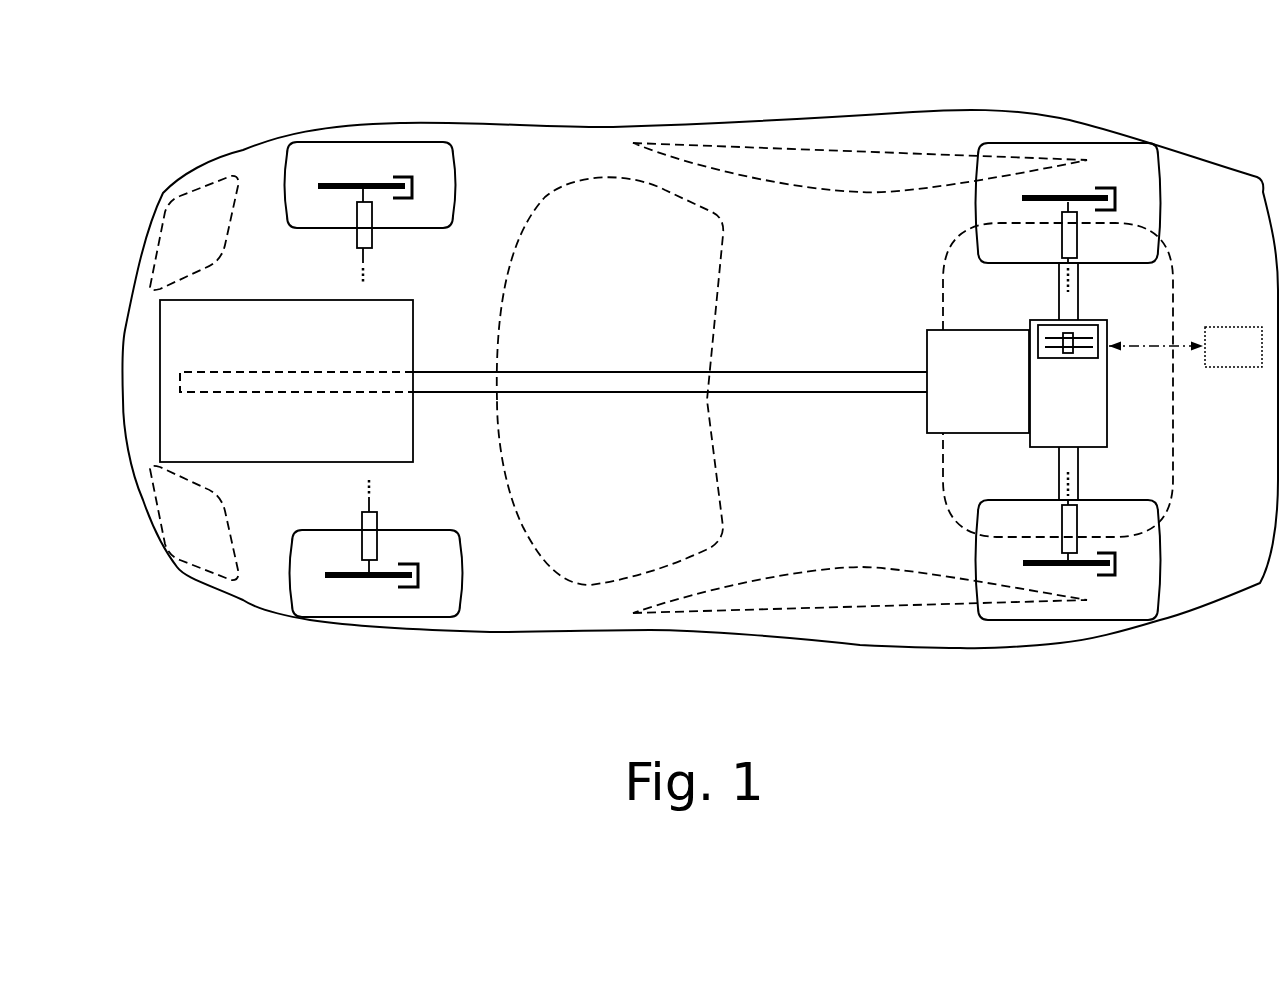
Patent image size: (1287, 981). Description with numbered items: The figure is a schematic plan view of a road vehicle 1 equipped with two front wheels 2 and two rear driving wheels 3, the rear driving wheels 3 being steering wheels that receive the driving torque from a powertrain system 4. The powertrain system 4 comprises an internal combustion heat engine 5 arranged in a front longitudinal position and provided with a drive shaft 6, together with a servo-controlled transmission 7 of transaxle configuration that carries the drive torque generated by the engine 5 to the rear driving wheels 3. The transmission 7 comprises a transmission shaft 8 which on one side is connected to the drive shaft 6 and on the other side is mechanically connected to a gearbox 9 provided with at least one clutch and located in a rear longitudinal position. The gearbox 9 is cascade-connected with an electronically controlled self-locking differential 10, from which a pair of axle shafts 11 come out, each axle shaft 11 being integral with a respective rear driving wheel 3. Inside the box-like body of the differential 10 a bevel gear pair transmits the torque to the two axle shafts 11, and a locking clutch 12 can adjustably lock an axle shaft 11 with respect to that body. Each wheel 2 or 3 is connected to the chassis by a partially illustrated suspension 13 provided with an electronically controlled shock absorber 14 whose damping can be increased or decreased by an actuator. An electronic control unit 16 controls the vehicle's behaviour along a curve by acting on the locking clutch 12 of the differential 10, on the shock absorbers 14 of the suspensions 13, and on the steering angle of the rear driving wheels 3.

The road vehicle 1 is at (1172, 692).
The front wheels 2 is at (307, 160).
The rear driving wheels 3 is at (1144, 160).
The powertrain system 4 is at (205, 147).
The internal combustion heat engine 5 is at (167, 327).
The drive shaft 6 is at (272, 383).
The servo-controlled transmission 7 is at (739, 100).
The transmission shaft 8 is at (735, 385).
The gearbox 9 is at (978, 381).
The electronically controlled self-locking differential 10 is at (1068, 383).
The axle shafts 11 is at (1065, 307).
The locking clutch 12 is at (1053, 330).
The suspension 13 is at (410, 211).
The electronically controlled shock absorber 14 is at (363, 236).
The electronic control unit 16 is at (1185, 347).